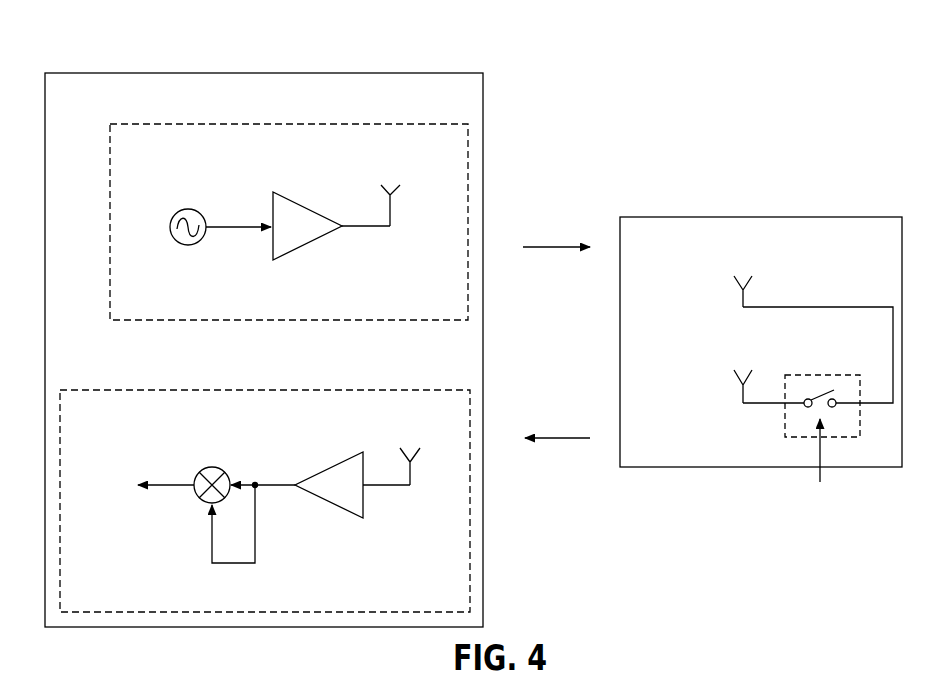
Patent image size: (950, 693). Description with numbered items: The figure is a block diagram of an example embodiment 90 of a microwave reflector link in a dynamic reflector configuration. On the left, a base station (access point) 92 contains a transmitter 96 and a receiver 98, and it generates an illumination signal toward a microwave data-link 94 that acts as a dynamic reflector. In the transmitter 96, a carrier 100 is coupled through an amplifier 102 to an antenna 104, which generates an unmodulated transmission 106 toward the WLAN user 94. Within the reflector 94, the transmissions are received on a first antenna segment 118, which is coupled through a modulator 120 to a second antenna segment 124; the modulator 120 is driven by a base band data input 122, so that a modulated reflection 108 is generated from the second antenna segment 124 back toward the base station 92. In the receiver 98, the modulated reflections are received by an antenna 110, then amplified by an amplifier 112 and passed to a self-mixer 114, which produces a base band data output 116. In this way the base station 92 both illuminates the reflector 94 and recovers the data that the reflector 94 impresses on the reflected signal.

The example embodiment 90 is at (106, 58).
The base station (access point) 92 is at (300, 73).
The microwave data-link 94 is at (852, 216).
The transmitter 96 is at (332, 322).
The receiver 98 is at (177, 385).
The carrier 100 is at (188, 246).
The amplifier 102 is at (283, 195).
The antenna 104 is at (386, 228).
The unmodulated transmission 106 is at (528, 245).
The modulated reflection 108 is at (547, 437).
The antenna 110 is at (388, 487).
The amplifier 112 is at (337, 507).
The self-mixer 114 is at (227, 475).
The base band data output 116 is at (178, 482).
The first antenna segment 118 is at (750, 296).
The modulator 120 is at (782, 418).
The base band data input 122 is at (803, 540).
The second antenna segment 124 is at (740, 372).